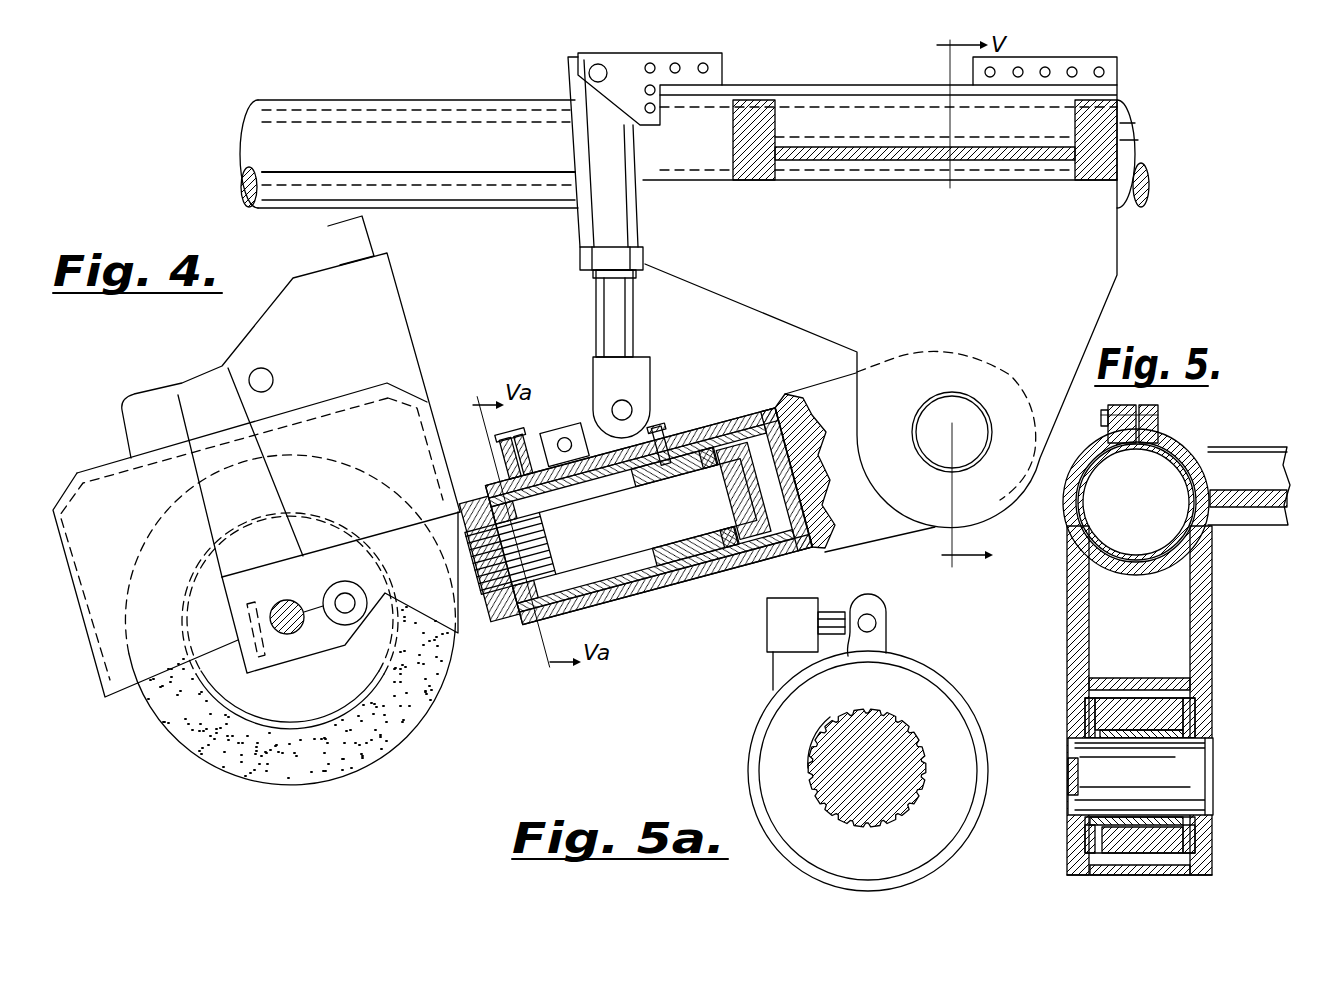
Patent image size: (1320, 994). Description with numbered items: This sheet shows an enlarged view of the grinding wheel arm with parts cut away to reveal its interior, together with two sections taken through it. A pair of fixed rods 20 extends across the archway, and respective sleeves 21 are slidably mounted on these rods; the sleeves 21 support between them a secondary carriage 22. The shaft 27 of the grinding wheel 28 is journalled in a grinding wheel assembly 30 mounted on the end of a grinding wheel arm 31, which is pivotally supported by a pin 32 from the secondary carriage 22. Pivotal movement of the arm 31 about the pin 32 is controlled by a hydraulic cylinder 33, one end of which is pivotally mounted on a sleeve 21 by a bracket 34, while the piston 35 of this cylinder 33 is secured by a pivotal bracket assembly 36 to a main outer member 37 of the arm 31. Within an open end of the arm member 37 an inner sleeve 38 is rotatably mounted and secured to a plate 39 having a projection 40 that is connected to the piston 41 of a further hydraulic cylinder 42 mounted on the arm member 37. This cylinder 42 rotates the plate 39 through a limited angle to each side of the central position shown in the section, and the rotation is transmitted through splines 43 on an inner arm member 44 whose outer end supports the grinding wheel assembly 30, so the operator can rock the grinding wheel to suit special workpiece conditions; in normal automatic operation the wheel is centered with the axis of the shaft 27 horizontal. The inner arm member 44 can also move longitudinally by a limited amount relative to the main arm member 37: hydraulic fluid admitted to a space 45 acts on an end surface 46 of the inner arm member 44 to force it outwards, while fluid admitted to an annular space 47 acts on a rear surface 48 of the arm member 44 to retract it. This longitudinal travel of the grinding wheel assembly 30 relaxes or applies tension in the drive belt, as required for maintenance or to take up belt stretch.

In FIG. 4, the fixed rod 20 is at (419, 105).
In FIG. 5, the fixed rod 20 is at (1162, 441).
In FIG. 4, the sleeve 21 is at (815, 87).
In FIG. 5, the sleeve 21 is at (1192, 540).
In FIG. 4, the secondary carriage 22 is at (1087, 278).
In FIG. 5, the secondary carriage 22 is at (1190, 617).
In FIG. 4, the shaft 27 is at (292, 636).
In FIG. 4, the grinding wheel 28 is at (422, 690).
In FIG. 4, the grinding wheel assembly 30 is at (390, 414).
In FIG. 4, the grinding wheel arm 31 is at (707, 590).
In FIG. 5, the grinding wheel arm 31 is at (1157, 712).
In FIG. 4, the pin 32 is at (965, 407).
In FIG. 5, the pin 32 is at (1200, 777).
In FIG. 4, the hydraulic cylinder 33 is at (600, 232).
In FIG. 4, the bracket 34 is at (628, 48).
In FIG. 4, the piston 35 is at (597, 325).
In FIG. 4, the pivotal bracket assembly 36 is at (641, 394).
In FIG. 4, the main outer member 37 is at (714, 426).
In FIG. 5A, the main outer member 37 is at (935, 676).
In FIG. 4, the inner sleeve 38 is at (652, 586).
In FIG. 4, the plate 39 is at (512, 472).
In FIG. 5A, the plate 39 is at (932, 710).
In FIG. 4, the projection 40 is at (515, 458).
In FIG. 5A, the projection 40 is at (880, 628).
In FIG. 5A, the piston 41 is at (836, 612).
In FIG. 4, the further hydraulic cylinder 42 is at (570, 417).
In FIG. 5A, the further hydraulic cylinder 42 is at (773, 637).
In FIG. 4, the splines 43 is at (556, 548).
In FIG. 5A, the splines 43 is at (810, 790).
In FIG. 4, the inner arm member 44 is at (703, 548).
In FIG. 5A, the inner arm member 44 is at (840, 743).
In FIG. 4, the space 45 is at (783, 398).
In FIG. 4, the end surface 46 is at (769, 489).
In FIG. 4, the annular space 47 is at (689, 430).
In FIG. 4, the rear surface 48 is at (731, 534).